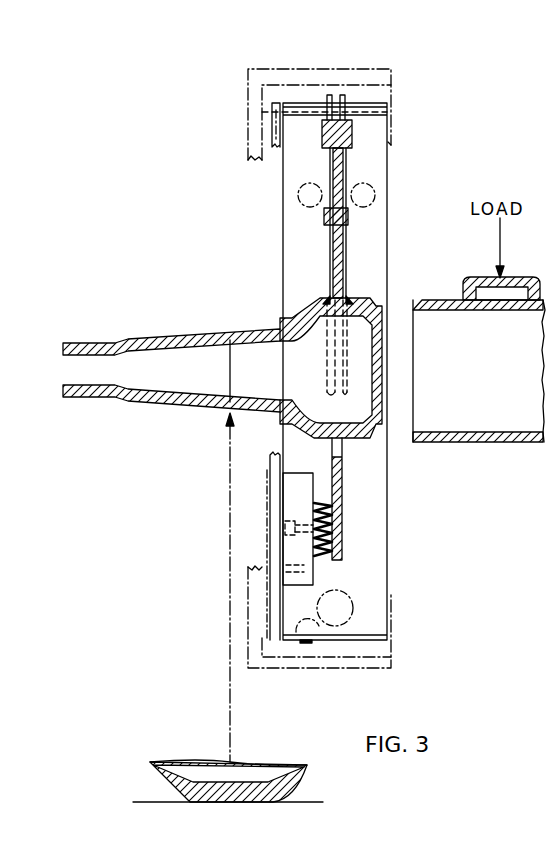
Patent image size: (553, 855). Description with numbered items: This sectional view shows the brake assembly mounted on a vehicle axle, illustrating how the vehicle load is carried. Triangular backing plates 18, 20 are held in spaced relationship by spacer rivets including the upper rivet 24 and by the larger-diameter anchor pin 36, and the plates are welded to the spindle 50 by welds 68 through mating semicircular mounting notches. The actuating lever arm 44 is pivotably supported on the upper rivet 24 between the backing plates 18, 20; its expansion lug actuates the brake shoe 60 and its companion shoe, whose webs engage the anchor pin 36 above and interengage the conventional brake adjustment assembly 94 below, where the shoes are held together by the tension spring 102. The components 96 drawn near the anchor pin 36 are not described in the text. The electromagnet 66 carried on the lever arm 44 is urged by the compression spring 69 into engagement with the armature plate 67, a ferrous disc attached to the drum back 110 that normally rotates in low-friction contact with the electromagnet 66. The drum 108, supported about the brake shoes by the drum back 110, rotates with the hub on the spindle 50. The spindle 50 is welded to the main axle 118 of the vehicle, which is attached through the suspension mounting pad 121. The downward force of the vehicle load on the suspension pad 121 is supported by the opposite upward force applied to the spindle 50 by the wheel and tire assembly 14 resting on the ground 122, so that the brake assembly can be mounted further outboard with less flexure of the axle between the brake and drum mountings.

The wheel and tire assembly 14 is at (152, 763).
The backing plate 18 is at (346, 270).
The backing plate 20 is at (330, 273).
The upper spacer rivet 24 is at (328, 225).
The anchor pin 36 is at (352, 142).
The actuating lever arm 44 is at (342, 479).
The spindle 50 is at (173, 335).
The brake shoe 60 is at (304, 160).
The electromagnet 66 is at (290, 497).
The armature plate 67 is at (273, 519).
The weld 68 is at (323, 300).
The compression spring 69 is at (338, 520).
The brake adjustment assembly 94 is at (351, 600).
The rollers 96 is at (309, 207).
The tension spring 102 is at (313, 628).
The drum 108 is at (313, 69).
The drum back 110 is at (247, 142).
The main axle 118 is at (492, 442).
The suspension mounting pad 121 is at (472, 283).
The ground 122 is at (312, 802).